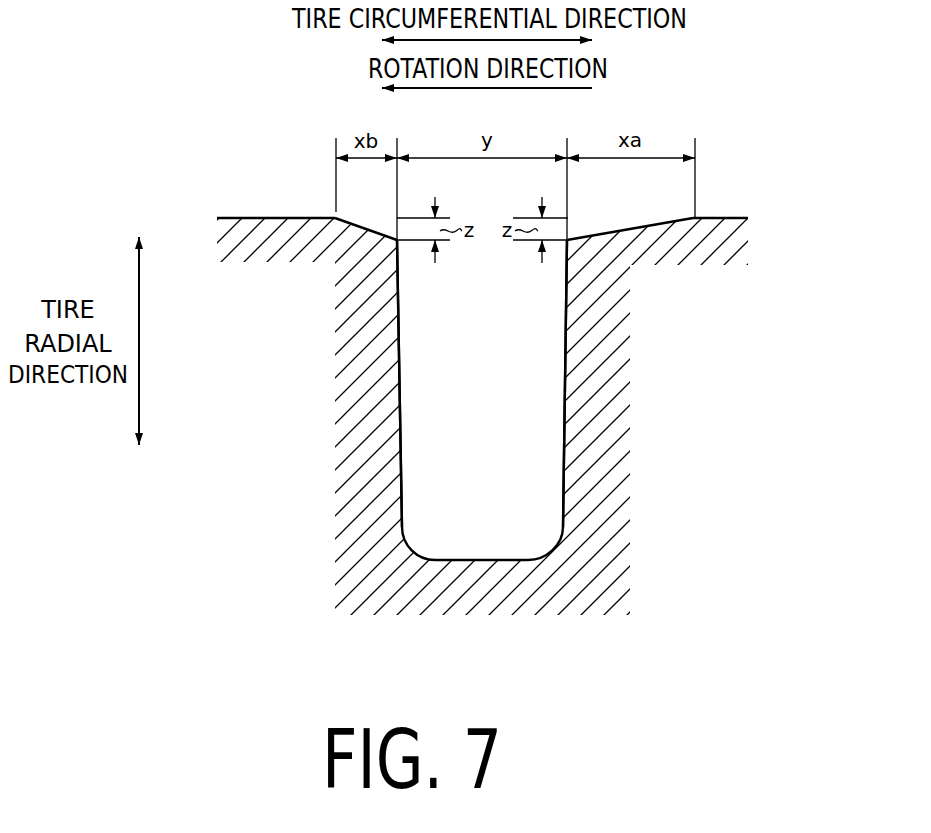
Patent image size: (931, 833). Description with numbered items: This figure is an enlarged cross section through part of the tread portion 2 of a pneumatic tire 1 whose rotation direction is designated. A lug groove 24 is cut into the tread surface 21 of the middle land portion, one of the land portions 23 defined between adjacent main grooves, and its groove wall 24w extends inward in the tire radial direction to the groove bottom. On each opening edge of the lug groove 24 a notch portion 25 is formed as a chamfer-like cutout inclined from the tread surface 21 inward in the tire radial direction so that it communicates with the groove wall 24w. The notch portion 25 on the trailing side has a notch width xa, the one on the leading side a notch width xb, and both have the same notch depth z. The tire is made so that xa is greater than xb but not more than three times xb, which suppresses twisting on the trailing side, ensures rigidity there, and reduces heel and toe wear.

The pneumatic tire 1 is at (777, 59).
The tread portion 2 is at (725, 233).
The tread surface 21 is at (710, 215).
The land portion 23 is at (233, 243).
The lug groove 24 is at (469, 414).
The groove wall 24w is at (402, 335).
The notch portion 25 is at (368, 229).